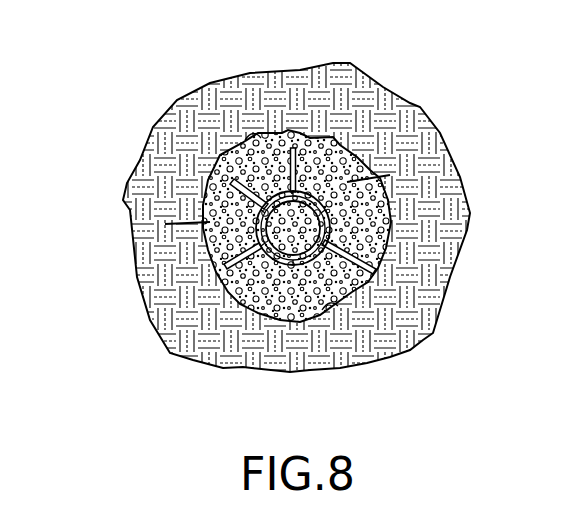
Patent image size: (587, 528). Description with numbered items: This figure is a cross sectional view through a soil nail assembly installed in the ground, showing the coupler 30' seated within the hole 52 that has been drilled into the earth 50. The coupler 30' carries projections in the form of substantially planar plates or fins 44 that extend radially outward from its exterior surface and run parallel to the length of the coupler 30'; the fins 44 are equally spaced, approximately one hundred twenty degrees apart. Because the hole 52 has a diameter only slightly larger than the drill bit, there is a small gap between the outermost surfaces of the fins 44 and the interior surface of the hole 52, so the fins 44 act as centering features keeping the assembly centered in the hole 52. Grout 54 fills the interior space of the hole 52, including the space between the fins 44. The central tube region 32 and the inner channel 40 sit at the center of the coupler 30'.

The coupler 30' is at (206, 226).
The central tube 32 is at (330, 214).
The inner channel 40 is at (325, 232).
The plates or fins 44 is at (338, 142).
The earth 50 is at (403, 143).
The hole 52 is at (253, 133).
The grout 54 is at (165, 224).